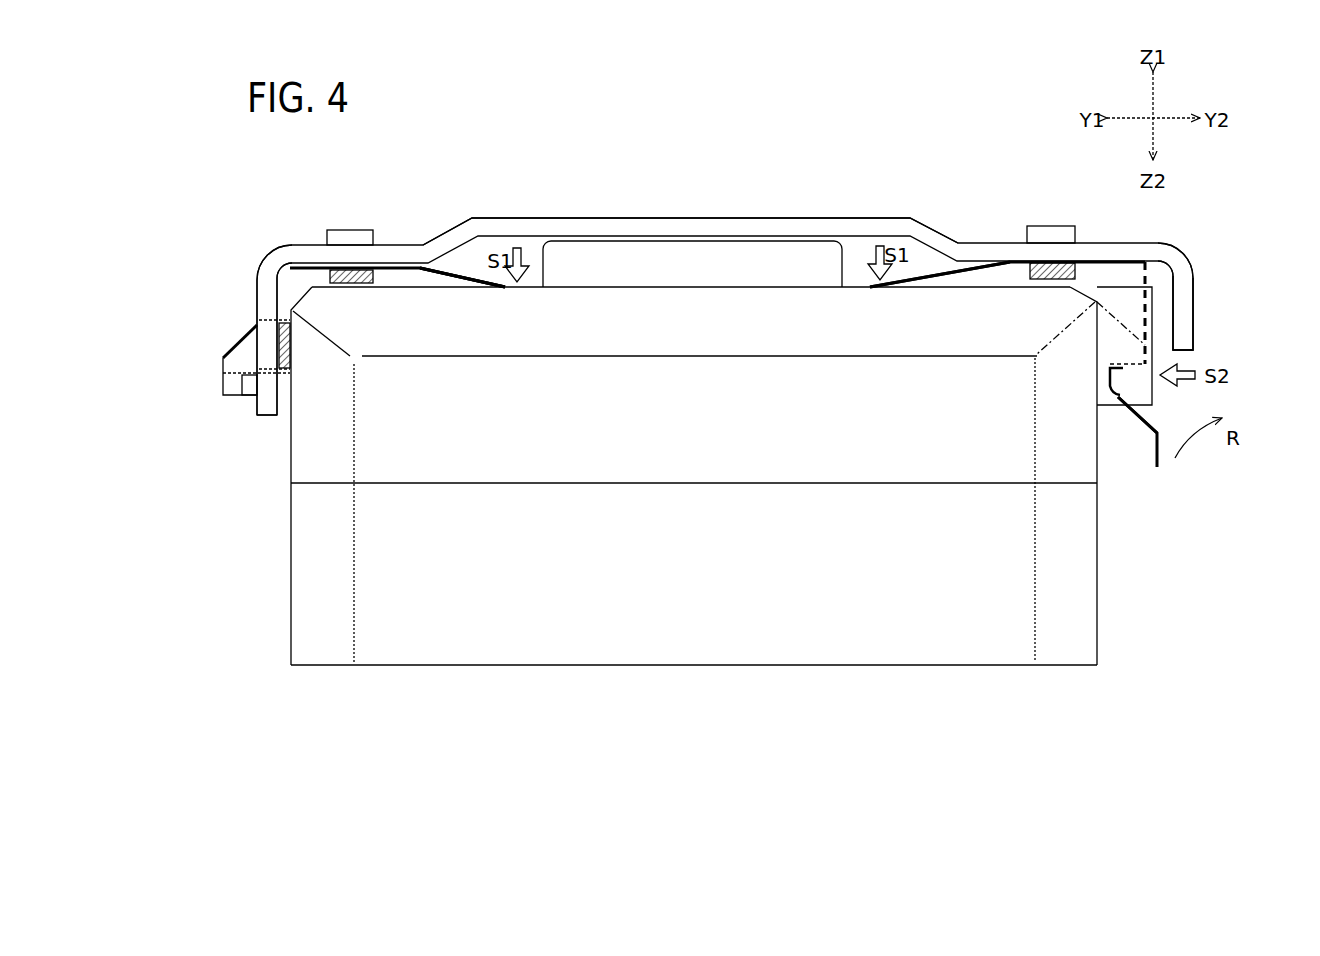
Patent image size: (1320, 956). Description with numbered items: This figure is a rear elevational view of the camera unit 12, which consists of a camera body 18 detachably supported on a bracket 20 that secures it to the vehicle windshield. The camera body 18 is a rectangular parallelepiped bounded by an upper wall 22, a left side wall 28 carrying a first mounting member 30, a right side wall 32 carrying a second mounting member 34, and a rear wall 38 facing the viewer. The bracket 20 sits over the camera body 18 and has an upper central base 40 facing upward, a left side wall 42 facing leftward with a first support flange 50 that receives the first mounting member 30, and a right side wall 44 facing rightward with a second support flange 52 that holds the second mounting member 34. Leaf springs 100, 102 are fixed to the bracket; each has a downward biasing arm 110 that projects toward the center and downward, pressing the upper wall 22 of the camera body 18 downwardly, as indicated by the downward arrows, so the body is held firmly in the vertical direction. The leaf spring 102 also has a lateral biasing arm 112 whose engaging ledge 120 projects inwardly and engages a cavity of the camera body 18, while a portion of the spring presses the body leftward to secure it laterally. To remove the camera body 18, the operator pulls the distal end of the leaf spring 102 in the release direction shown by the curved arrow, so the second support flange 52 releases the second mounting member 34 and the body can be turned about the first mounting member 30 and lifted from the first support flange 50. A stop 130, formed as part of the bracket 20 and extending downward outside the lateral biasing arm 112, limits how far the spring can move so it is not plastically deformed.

The camera unit 12 is at (690, 199).
The camera body 18 is at (745, 275).
The bracket 20 is at (663, 217).
The upper wall 22 is at (392, 286).
The left side wall 28 is at (291, 585).
The first mounting member 30 is at (220, 372).
The right side wall 32 is at (1100, 596).
The second mounting member 34 is at (1160, 398).
The rear wall 38 is at (448, 653).
The upper central base 40 is at (520, 217).
The left side wall 42 is at (253, 292).
The right side wall 44 is at (1197, 272).
The first support flange 50 is at (250, 403).
The second support flange 52 is at (1166, 466).
The leaf spring 100 is at (463, 268).
The leaf spring 102 is at (1146, 432).
The downward biasing arm 110 is at (446, 272).
The lateral biasing arm 112 is at (1146, 272).
The engaging ledge 120 is at (1096, 383).
The stop 130 is at (1185, 318).